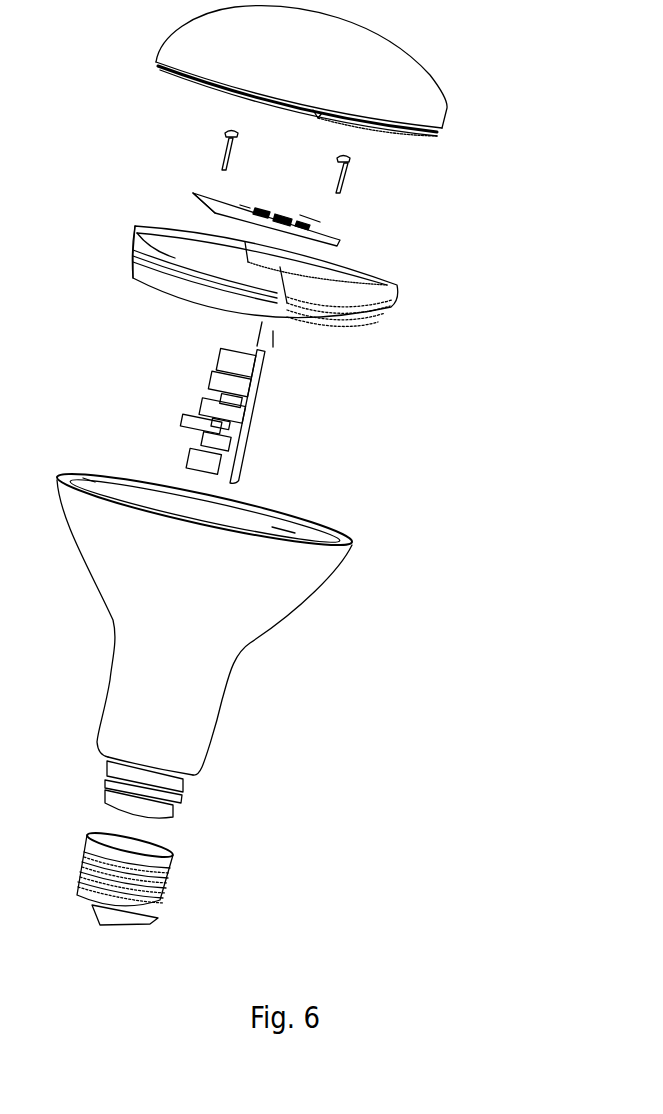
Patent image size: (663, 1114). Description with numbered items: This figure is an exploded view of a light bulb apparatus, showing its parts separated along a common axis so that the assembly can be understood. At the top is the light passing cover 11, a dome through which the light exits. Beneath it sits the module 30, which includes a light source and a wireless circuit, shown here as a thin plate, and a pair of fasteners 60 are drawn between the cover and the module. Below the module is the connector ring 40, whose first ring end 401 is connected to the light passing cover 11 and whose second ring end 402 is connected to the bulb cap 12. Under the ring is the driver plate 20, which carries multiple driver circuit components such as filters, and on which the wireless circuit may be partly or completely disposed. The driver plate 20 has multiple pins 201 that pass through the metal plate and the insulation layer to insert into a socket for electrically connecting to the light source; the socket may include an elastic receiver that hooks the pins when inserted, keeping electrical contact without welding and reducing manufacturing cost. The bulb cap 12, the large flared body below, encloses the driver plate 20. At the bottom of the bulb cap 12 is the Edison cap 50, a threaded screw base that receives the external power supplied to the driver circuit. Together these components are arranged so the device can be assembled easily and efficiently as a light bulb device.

The light passing cover 11 is at (443, 107).
The screws 60 is at (353, 173).
The module 30 is at (350, 243).
The connector ring 40 is at (382, 324).
The first ring end 401 is at (137, 226).
The second ring end 402 is at (135, 272).
The pins 201 is at (278, 343).
The driver plate 20 is at (260, 395).
The bulb cap 12 is at (220, 690).
The Edison cap 50 is at (167, 880).